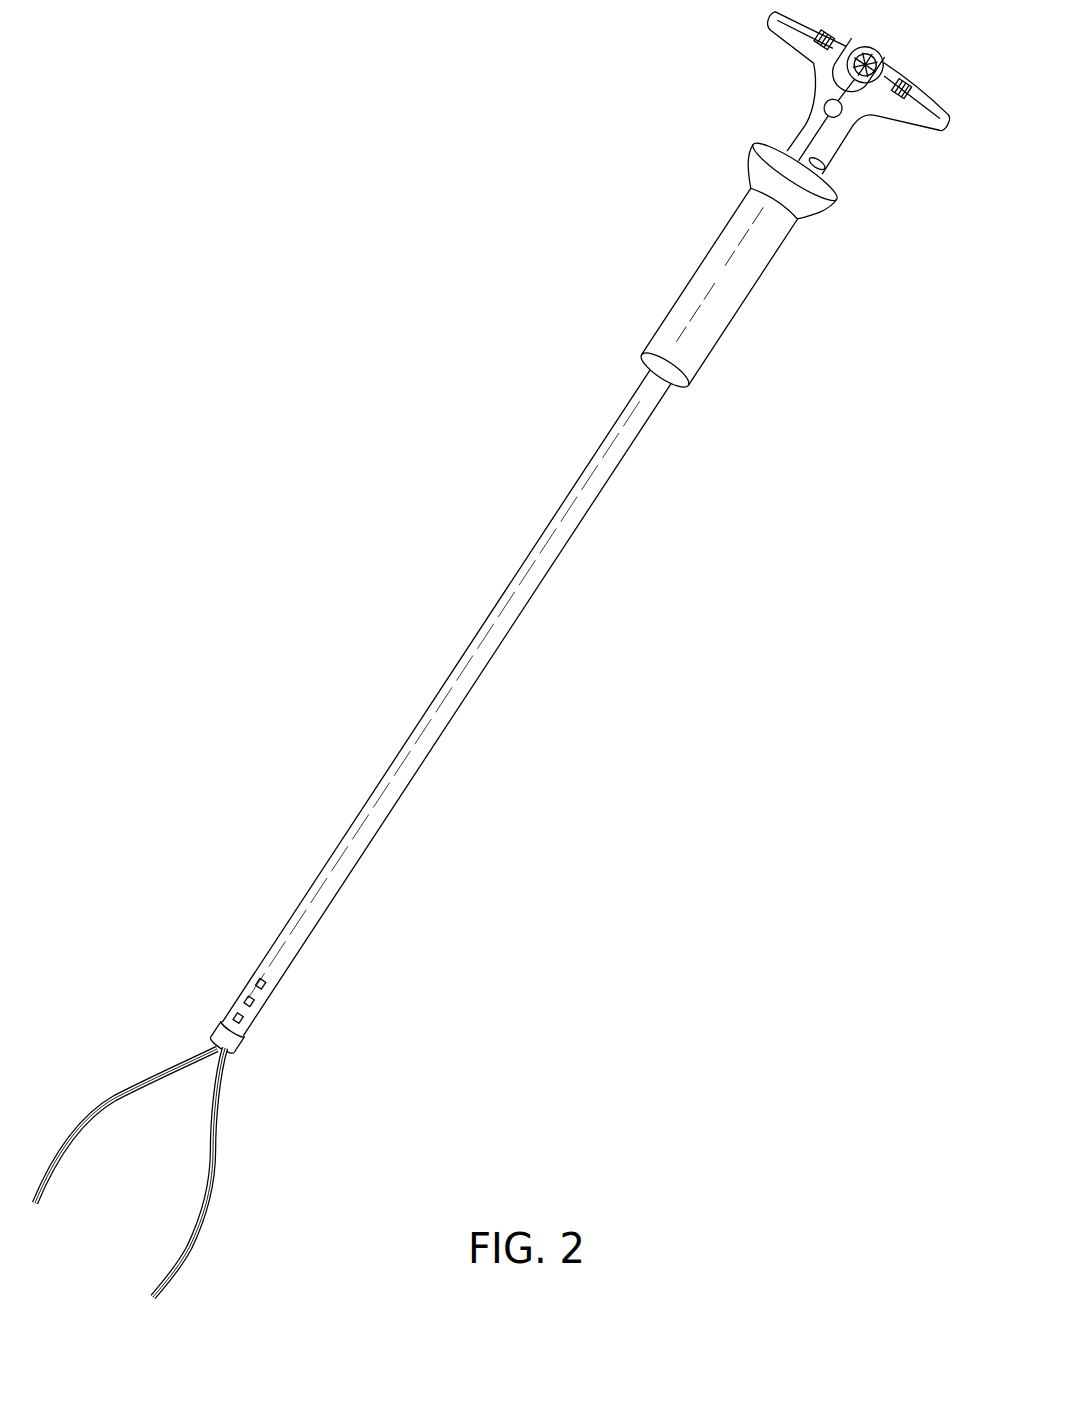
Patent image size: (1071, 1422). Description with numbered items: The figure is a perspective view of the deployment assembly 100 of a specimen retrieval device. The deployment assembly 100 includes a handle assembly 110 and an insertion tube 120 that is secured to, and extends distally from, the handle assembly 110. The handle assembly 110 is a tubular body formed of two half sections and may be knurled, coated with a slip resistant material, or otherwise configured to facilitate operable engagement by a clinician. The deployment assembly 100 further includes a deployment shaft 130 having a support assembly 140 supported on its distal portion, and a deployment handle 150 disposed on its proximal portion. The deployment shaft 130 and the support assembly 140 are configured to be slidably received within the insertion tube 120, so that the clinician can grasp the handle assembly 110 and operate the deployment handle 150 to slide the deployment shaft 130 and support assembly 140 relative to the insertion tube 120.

The deployment assembly 100 is at (385, 622).
The handle assembly 110 is at (760, 310).
The insertion tube 120 is at (530, 652).
The deployment shaft 130 is at (245, 1062).
The support assembly 140 is at (229, 1216).
The deployment handle 150 is at (859, 147).